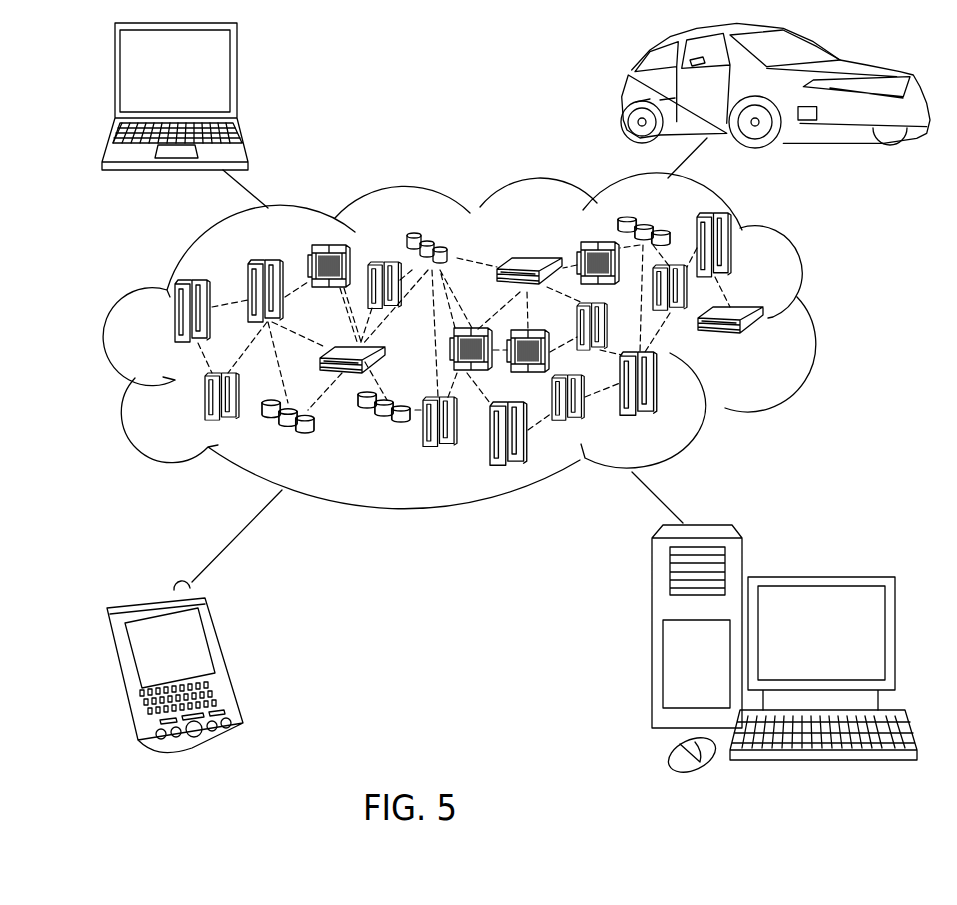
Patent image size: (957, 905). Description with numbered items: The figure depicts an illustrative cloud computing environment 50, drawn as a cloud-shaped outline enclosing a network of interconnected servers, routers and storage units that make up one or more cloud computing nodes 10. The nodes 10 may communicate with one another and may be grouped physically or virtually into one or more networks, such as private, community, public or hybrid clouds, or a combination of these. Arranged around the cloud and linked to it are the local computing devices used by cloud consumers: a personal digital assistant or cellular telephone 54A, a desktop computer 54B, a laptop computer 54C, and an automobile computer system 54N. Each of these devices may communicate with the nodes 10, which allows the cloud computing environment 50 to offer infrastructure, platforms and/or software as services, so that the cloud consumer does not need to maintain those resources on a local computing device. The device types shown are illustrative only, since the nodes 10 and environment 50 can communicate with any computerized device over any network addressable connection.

The cloud computing node 10 is at (760, 357).
The cloud computing environment 50 is at (817, 318).
The personal digital assistant or cellular telephone 54A is at (230, 660).
The desktop computer 54B is at (818, 575).
The laptop computer 54C is at (237, 77).
The automobile computer system 54N is at (627, 90).